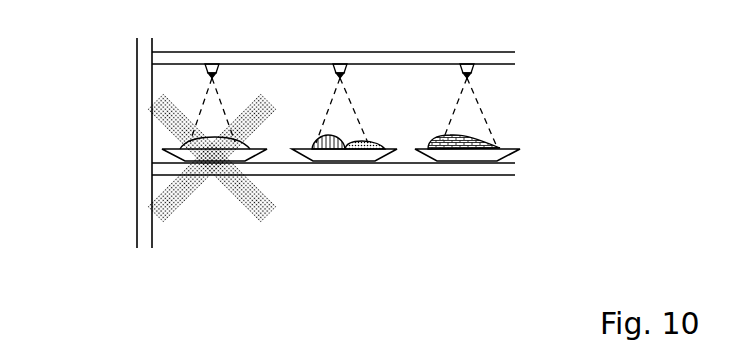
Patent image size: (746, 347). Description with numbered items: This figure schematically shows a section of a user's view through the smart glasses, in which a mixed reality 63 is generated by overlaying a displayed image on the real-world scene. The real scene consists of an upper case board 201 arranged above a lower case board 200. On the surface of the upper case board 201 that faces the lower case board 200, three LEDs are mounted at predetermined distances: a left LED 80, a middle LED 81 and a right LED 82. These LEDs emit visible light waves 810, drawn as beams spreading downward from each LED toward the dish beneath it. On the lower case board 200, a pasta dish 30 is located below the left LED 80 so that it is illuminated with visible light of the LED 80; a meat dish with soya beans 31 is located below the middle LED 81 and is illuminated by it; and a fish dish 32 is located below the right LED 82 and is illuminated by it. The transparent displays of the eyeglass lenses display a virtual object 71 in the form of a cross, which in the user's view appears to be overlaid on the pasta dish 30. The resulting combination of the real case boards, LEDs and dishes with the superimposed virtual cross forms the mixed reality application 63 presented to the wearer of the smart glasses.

The mixed reality application 63 is at (80, 93).
The left LED 80 is at (205, 72).
The middle LED 81 is at (333, 70).
The right LED 82 is at (460, 71).
The visible light waves 810 is at (328, 103).
The pasta dish 30 is at (217, 138).
The meat dish with soya beans 31 is at (326, 147).
The fish dish 32 is at (447, 150).
The virtual object 71 is at (243, 190).
The lower case board 200 is at (510, 177).
The upper case board 201 is at (505, 65).